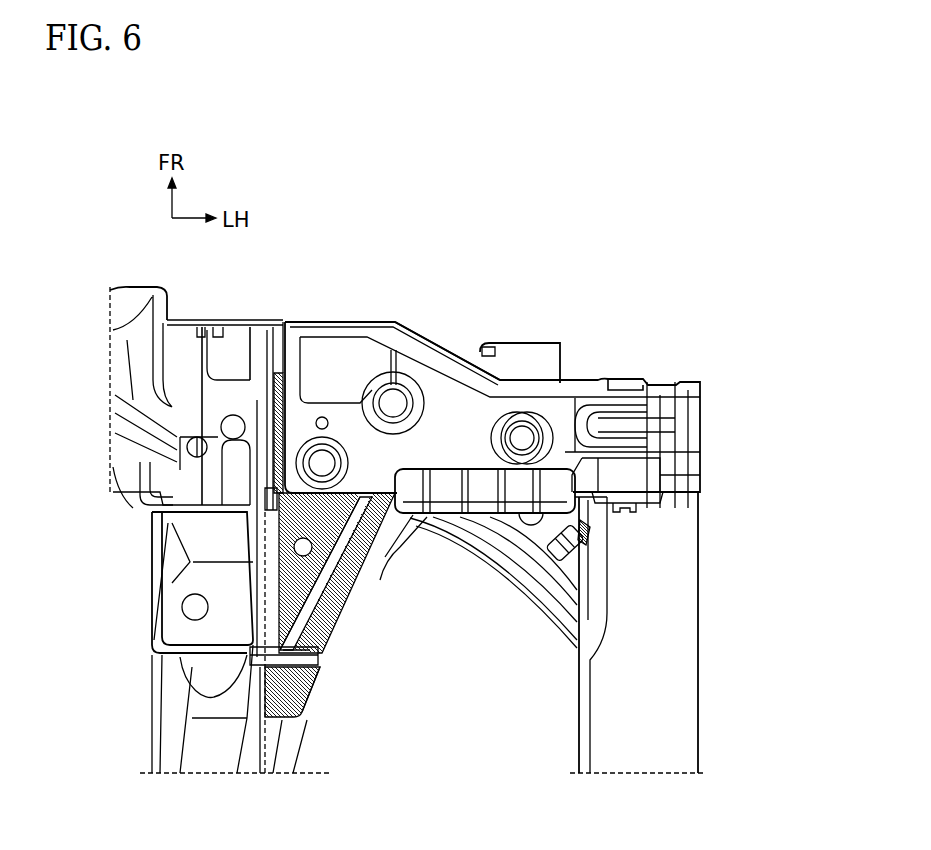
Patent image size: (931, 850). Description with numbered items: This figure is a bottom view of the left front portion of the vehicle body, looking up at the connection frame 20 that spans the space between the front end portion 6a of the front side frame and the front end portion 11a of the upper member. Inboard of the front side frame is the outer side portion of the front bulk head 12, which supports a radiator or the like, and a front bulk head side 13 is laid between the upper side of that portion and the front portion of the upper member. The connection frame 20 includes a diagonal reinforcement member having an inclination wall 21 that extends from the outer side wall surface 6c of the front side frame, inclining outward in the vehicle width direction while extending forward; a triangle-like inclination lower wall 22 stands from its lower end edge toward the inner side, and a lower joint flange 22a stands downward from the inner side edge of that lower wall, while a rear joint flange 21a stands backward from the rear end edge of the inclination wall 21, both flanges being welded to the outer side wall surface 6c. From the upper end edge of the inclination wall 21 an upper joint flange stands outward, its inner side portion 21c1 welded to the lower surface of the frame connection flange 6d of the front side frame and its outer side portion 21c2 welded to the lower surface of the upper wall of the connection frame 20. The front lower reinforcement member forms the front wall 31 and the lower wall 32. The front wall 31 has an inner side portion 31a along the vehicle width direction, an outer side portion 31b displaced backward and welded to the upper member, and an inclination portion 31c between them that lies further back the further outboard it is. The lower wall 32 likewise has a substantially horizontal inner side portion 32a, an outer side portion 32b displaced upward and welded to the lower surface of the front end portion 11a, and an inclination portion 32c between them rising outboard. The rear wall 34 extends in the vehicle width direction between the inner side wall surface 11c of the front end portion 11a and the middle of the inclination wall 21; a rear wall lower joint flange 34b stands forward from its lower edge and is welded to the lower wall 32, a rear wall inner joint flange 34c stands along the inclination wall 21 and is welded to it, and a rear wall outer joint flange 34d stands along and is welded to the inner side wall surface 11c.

The front end portion of the front side frame 6a is at (172, 625).
The outer side wall surface 6c is at (263, 742).
The frame connection flange 6d is at (293, 731).
The front end portion of the upper member 11a is at (683, 521).
The inner side wall surface 11c is at (578, 673).
The front bulk head 12 is at (128, 303).
The front bulk head side 13 is at (540, 590).
The connection frame 20 is at (436, 264).
The inclination wall 21 is at (303, 580).
The rear joint flange 21a is at (265, 708).
The inner side portion of the upper joint flange 21c1 is at (297, 682).
The outer side portion of the upper joint flange 21c2 is at (332, 547).
The inclination lower wall 22 is at (303, 582).
The lower joint flange 22a is at (265, 415).
The front wall 31 is at (377, 315).
The inner side portion of the front wall 31a is at (322, 360).
The outer side portion of the front wall 31b is at (628, 387).
The inclination portion of the front wall 31c is at (452, 357).
The lower wall 32 is at (700, 425).
The inner side portion of the lower wall 32a is at (323, 365).
The outer side portion of the lower wall 32b is at (652, 428).
The inclination portion of the lower wall 32c is at (457, 403).
The rear wall 34 is at (483, 516).
The rear wall lower joint flange 34b is at (553, 482).
The rear wall inner joint flange 34c is at (330, 520).
The rear wall outer joint flange 34d is at (585, 518).